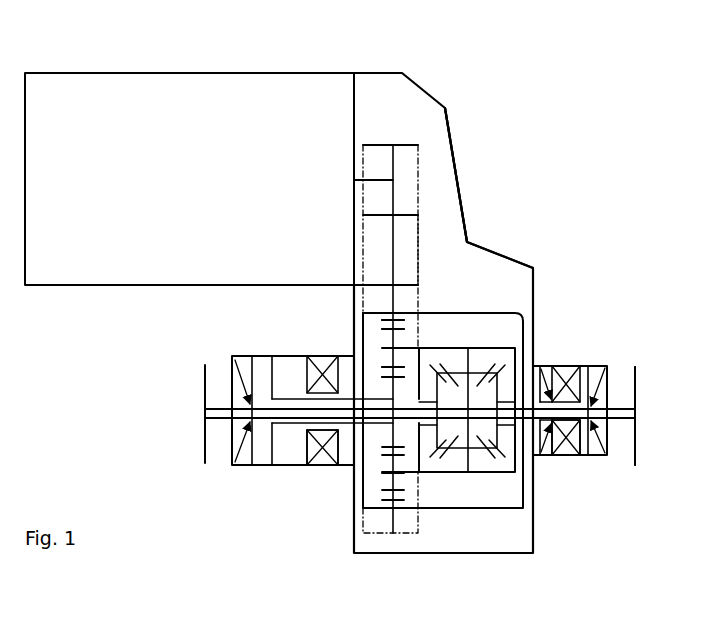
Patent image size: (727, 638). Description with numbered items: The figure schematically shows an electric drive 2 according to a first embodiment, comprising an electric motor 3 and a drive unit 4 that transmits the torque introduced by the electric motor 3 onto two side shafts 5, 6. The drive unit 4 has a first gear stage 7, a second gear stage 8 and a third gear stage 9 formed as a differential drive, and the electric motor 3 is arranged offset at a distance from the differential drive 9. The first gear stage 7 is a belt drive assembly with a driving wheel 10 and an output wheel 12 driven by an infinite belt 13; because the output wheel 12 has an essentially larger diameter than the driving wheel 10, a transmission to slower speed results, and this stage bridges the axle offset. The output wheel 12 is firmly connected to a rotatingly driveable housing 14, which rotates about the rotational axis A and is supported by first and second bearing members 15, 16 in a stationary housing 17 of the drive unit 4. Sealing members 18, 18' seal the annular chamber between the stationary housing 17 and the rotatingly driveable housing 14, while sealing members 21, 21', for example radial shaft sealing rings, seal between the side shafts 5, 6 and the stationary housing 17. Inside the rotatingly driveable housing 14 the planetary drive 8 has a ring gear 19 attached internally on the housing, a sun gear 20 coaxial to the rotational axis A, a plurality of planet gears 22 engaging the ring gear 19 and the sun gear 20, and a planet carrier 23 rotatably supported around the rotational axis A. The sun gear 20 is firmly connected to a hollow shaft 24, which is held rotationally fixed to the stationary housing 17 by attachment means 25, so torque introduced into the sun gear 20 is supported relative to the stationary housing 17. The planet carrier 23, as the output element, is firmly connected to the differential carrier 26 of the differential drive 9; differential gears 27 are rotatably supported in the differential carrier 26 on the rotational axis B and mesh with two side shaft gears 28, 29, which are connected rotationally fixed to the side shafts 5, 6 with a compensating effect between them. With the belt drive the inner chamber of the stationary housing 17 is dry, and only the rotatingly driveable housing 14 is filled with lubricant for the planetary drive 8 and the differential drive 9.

The electric drive 2 is at (569, 109).
The electric motor 3 is at (166, 195).
The drive unit 4 is at (440, 82).
The side shaft 5 is at (622, 398).
The side shaft 6 is at (218, 420).
The first gear stage 7 is at (384, 132).
The second gear stage 8 is at (409, 514).
The third gear stage 9 is at (509, 492).
The driving wheel 10 is at (410, 140).
The output wheel 12 is at (408, 282).
The infinite belt 13 is at (408, 240).
The rotatingly driveable housing 14 is at (518, 313).
The first bearing member 15 is at (567, 457).
The second bearing member 16 is at (333, 434).
The stationary housing 17 is at (458, 172).
The sealing member 18 is at (574, 388).
The sealing member 18' is at (324, 394).
The ring gear 19 is at (398, 325).
The sun gear 20 is at (388, 372).
The sealing member 21 is at (625, 435).
The sealing member 21' is at (242, 503).
The planet gears 22 is at (395, 340).
The planet carrier 23 is at (408, 475).
The hollow shaft 24 is at (285, 387).
The attachment means 25 is at (265, 376).
The differential carrier 26 is at (490, 470).
The differential gears 27 is at (477, 450).
The side shaft gear 28 is at (533, 366).
The side shaft gear 29 is at (455, 372).
The rotational axis A is at (293, 425).
The rotational axis B is at (465, 467).